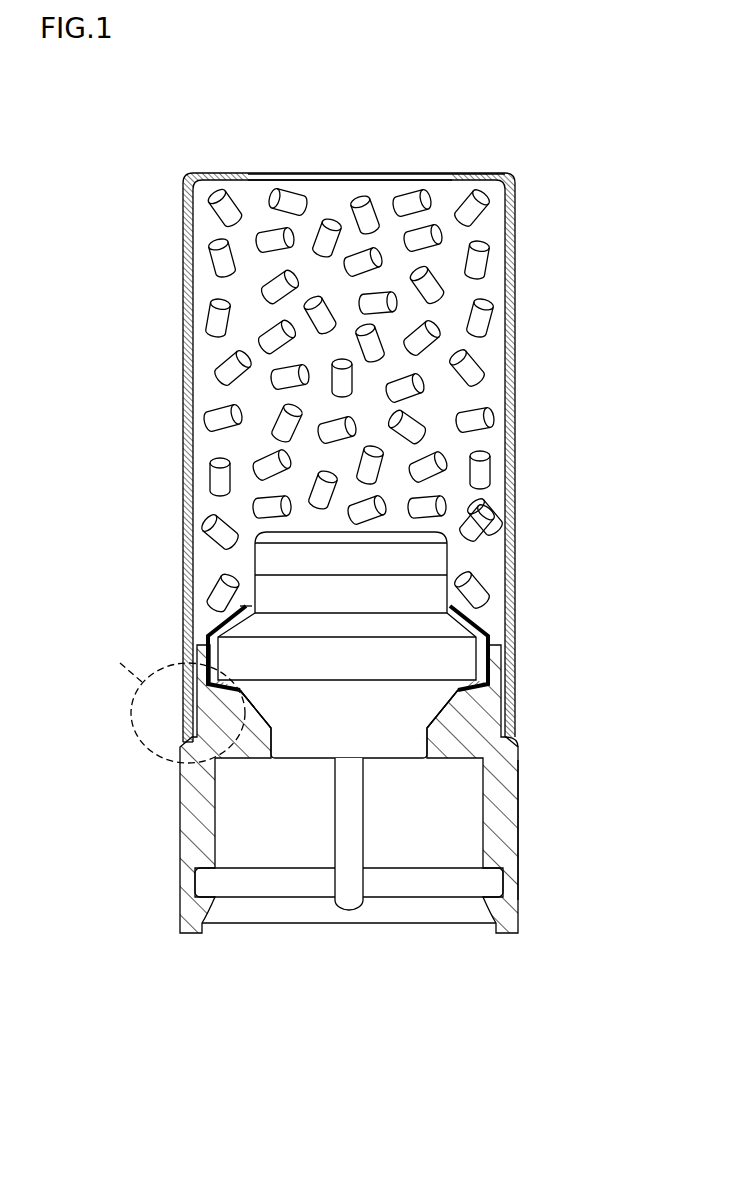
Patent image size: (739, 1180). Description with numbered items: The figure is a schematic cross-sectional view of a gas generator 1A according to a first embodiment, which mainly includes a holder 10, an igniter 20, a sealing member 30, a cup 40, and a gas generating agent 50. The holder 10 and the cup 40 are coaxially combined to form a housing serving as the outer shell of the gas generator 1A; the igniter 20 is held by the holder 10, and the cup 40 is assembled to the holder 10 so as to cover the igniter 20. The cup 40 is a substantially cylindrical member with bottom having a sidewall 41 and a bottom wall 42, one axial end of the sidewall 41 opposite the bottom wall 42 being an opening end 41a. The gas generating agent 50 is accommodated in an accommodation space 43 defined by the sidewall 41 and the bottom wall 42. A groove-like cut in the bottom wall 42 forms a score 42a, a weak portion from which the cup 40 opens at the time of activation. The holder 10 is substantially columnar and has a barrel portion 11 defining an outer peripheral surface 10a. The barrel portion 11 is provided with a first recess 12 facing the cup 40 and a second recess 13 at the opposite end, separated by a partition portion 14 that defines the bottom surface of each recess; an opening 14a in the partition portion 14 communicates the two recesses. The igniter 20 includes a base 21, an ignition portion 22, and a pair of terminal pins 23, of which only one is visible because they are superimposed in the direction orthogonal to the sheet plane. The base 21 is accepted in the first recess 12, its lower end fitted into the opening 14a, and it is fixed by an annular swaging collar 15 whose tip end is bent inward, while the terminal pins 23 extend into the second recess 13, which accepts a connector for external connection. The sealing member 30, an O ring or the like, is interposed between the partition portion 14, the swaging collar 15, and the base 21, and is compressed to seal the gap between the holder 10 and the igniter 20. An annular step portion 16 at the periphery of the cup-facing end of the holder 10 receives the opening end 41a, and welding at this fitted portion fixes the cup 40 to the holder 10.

The gas generator 1A is at (582, 104).
The holder 10 is at (518, 955).
The outer peripheral surface 10a is at (518, 830).
The barrel portion 11 is at (497, 785).
The first recess 12 is at (470, 656).
The second recess 13 is at (220, 846).
The partition portion 14 is at (462, 735).
The opening 14a is at (272, 762).
The swaging collar 15 is at (235, 617).
The annular step portion 16 is at (518, 740).
The igniter 20 is at (457, 559).
The base 21 is at (349, 660).
The ignition portion 22 is at (393, 587).
The terminal pins 23 is at (350, 835).
The sealing member 30 is at (484, 690).
The cup 40 is at (185, 157).
The sidewall 41 is at (183, 330).
The opening end 41a is at (183, 740).
The bottom wall 42 is at (475, 174).
The score 42a is at (352, 174).
The accommodation space 43 is at (487, 355).
The gas generating agent 50 is at (487, 258).